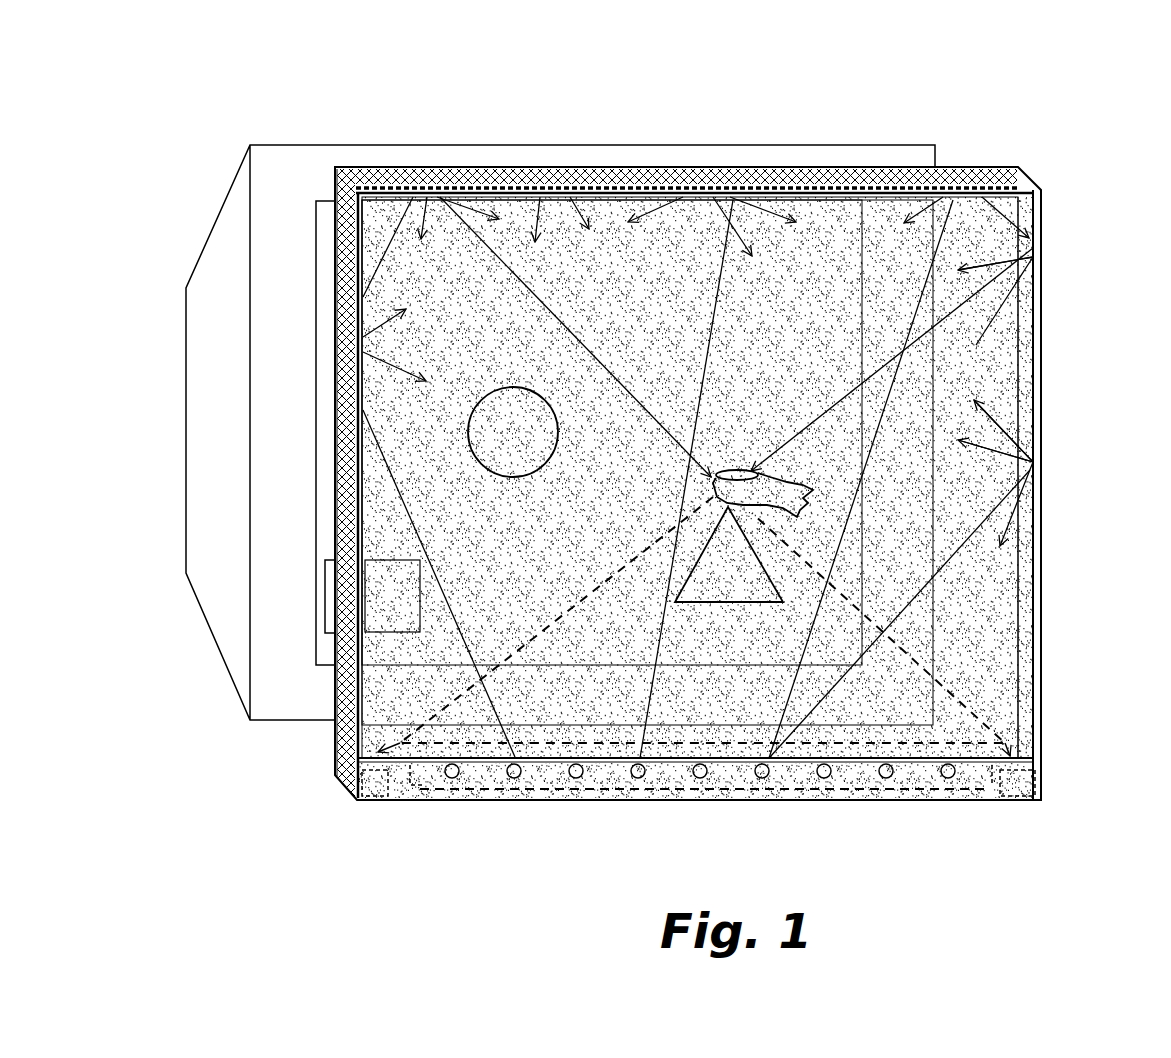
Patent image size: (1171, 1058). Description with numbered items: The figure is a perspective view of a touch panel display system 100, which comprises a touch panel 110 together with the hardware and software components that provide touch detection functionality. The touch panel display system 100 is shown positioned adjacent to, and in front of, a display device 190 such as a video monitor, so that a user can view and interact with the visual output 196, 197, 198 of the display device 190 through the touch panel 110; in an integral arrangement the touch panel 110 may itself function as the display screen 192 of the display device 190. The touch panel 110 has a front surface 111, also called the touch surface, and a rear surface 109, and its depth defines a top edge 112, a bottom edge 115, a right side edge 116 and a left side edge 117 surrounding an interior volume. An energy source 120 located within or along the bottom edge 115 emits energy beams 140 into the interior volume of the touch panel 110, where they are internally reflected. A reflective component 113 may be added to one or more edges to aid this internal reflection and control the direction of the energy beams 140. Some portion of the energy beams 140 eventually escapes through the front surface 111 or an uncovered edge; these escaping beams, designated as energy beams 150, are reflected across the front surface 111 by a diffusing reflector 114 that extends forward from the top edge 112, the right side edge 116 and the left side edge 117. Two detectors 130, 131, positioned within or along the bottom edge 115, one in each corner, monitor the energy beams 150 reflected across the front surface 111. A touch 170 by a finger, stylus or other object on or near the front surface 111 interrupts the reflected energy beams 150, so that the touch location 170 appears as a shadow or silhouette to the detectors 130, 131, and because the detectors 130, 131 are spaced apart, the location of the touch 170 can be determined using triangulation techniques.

The touch panel display system 100 is at (1076, 89).
The rear surface 109 is at (575, 168).
The touch panel 110 is at (700, 163).
The front surface 111 is at (538, 168).
The top edge 112 is at (907, 172).
The reflective component 113 is at (972, 234).
The diffusing reflector 114 is at (823, 172).
The bottom edge 115 is at (488, 804).
The right side edge 116 is at (1044, 645).
The left side edge 117 is at (345, 457).
The energy source 120 is at (870, 802).
The detector 130 is at (375, 802).
The detector 131 is at (1045, 790).
The energy beams 140 is at (708, 297).
The energy beams 150 is at (428, 380).
The touch 170 is at (748, 466).
The display device 190 is at (333, 138).
The display screen 192 is at (330, 291).
The visual output 196 is at (392, 596).
The visual output 197 is at (513, 432).
The visual output 198 is at (729, 554).